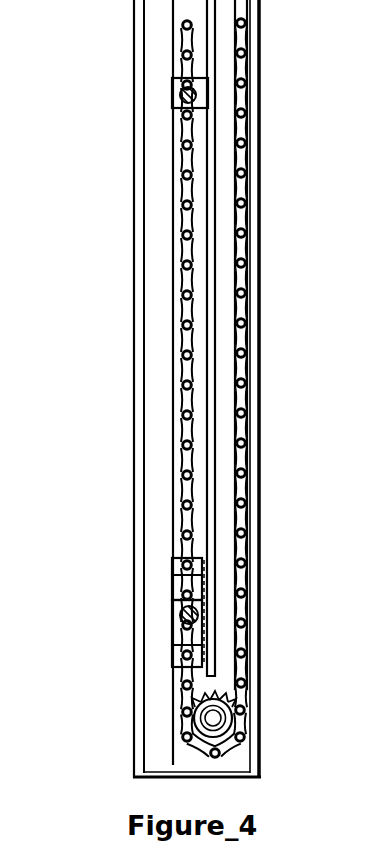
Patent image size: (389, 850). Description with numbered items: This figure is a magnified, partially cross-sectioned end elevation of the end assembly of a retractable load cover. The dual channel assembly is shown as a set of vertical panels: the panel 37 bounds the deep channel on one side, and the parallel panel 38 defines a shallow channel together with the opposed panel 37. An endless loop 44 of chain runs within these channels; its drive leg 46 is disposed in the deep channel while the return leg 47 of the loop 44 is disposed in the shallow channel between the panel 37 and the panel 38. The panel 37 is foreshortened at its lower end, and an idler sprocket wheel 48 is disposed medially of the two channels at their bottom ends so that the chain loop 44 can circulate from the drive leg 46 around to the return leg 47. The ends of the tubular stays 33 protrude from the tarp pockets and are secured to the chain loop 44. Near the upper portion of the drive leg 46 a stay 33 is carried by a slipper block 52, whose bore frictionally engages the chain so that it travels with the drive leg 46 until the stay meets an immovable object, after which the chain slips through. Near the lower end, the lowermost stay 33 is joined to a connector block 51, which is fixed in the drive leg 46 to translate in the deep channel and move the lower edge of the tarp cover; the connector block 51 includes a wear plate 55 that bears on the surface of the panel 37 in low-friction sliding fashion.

The tubular stay 33 is at (176, 98).
The panel 37 is at (212, 233).
The parallel panel 38 is at (260, 303).
The endless loop 44 is at (128, 438).
The drive leg 46 is at (182, 340).
The return leg 47 is at (246, 492).
The idler sprocket wheel 48 is at (220, 714).
The connector block 51 is at (175, 637).
The slipper block 52 is at (173, 80).
The wear plate 55 is at (173, 582).